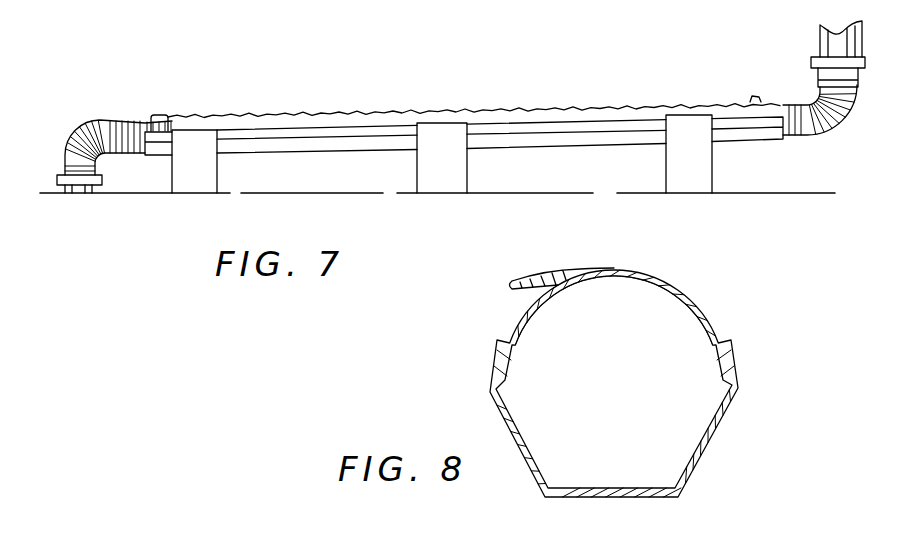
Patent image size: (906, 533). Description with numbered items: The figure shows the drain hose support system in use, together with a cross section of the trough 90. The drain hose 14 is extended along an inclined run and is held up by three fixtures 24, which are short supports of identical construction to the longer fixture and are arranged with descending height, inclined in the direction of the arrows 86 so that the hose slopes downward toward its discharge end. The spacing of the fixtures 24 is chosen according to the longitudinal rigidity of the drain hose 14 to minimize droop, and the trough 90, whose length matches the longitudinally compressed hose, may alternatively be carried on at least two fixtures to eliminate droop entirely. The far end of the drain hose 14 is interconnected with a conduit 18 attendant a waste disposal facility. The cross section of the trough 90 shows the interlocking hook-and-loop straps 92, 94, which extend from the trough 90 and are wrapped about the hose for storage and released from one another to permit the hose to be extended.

In FIG. 7, the drain hose 14 is at (592, 108).
In FIG. 7, the conduit 18 is at (58, 179).
In FIG. 7, the fixture 24 is at (195, 177).
In FIG. 7, the arrows 86 is at (175, 141).
In FIG. 7, the trough 90 is at (598, 148).
In FIG. 8, the trough 90 is at (707, 450).
In FIG. 8, the strap 92 is at (533, 282).
In FIG. 8, the strap 94 is at (540, 328).